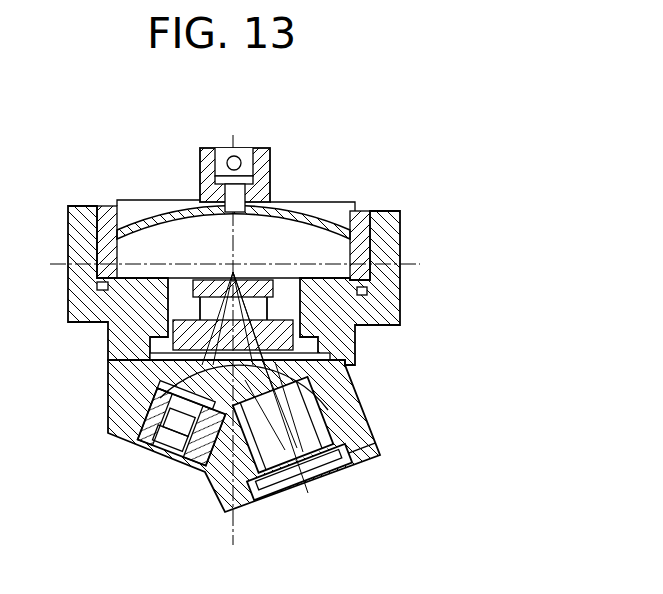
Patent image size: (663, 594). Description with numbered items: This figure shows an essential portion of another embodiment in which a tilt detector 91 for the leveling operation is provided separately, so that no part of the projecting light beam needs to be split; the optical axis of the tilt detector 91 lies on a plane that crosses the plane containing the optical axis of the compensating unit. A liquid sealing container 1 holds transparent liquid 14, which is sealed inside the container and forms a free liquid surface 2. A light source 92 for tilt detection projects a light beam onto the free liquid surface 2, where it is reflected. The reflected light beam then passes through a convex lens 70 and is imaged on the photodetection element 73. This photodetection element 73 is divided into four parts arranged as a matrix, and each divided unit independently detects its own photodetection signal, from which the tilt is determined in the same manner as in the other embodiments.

The liquid sealing container 1 is at (310, 275).
The free liquid surface 2 is at (157, 263).
The transparent liquid 14 is at (327, 228).
The convex lens 70 is at (317, 410).
The photodetection element 73 is at (310, 470).
The tilt detector 91 is at (392, 471).
The light source 92 is at (170, 456).